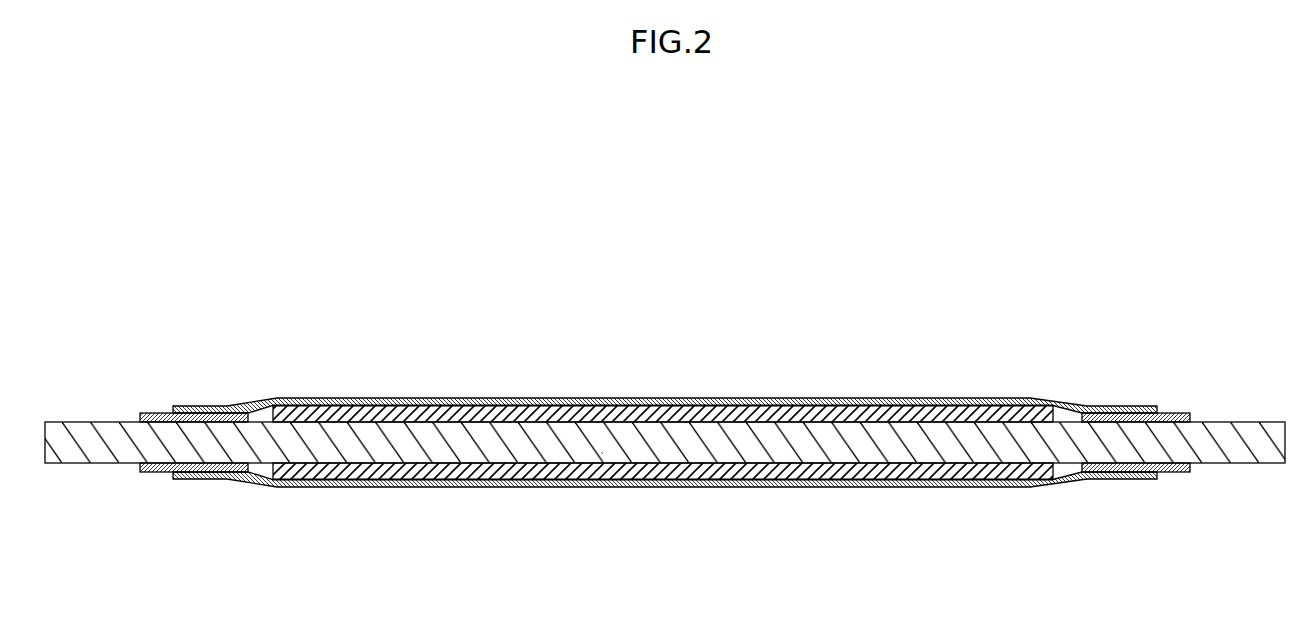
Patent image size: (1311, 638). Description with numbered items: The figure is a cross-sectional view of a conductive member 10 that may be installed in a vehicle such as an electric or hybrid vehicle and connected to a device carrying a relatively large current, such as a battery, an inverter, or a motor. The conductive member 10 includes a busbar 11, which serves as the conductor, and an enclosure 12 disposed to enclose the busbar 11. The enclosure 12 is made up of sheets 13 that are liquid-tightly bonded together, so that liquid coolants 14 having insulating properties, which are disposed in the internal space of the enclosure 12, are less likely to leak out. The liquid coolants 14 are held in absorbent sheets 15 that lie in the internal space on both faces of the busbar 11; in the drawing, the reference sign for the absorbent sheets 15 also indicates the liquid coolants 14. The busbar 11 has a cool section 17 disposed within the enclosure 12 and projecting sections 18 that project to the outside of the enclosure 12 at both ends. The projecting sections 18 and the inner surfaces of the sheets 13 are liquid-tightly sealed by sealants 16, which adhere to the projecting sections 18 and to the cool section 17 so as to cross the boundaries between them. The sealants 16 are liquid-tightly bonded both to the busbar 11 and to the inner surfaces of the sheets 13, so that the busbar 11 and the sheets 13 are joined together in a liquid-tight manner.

The conductive member 10 is at (977, 383).
The busbar 11 is at (1218, 430).
The enclosure 12 is at (613, 400).
The sheets 13 is at (690, 399).
The liquid coolants 14 is at (905, 408).
The absorbent sheets 15 is at (813, 404).
The sealants 16 is at (158, 413).
The cool section 17 is at (602, 453).
The projecting sections 18 is at (80, 440).